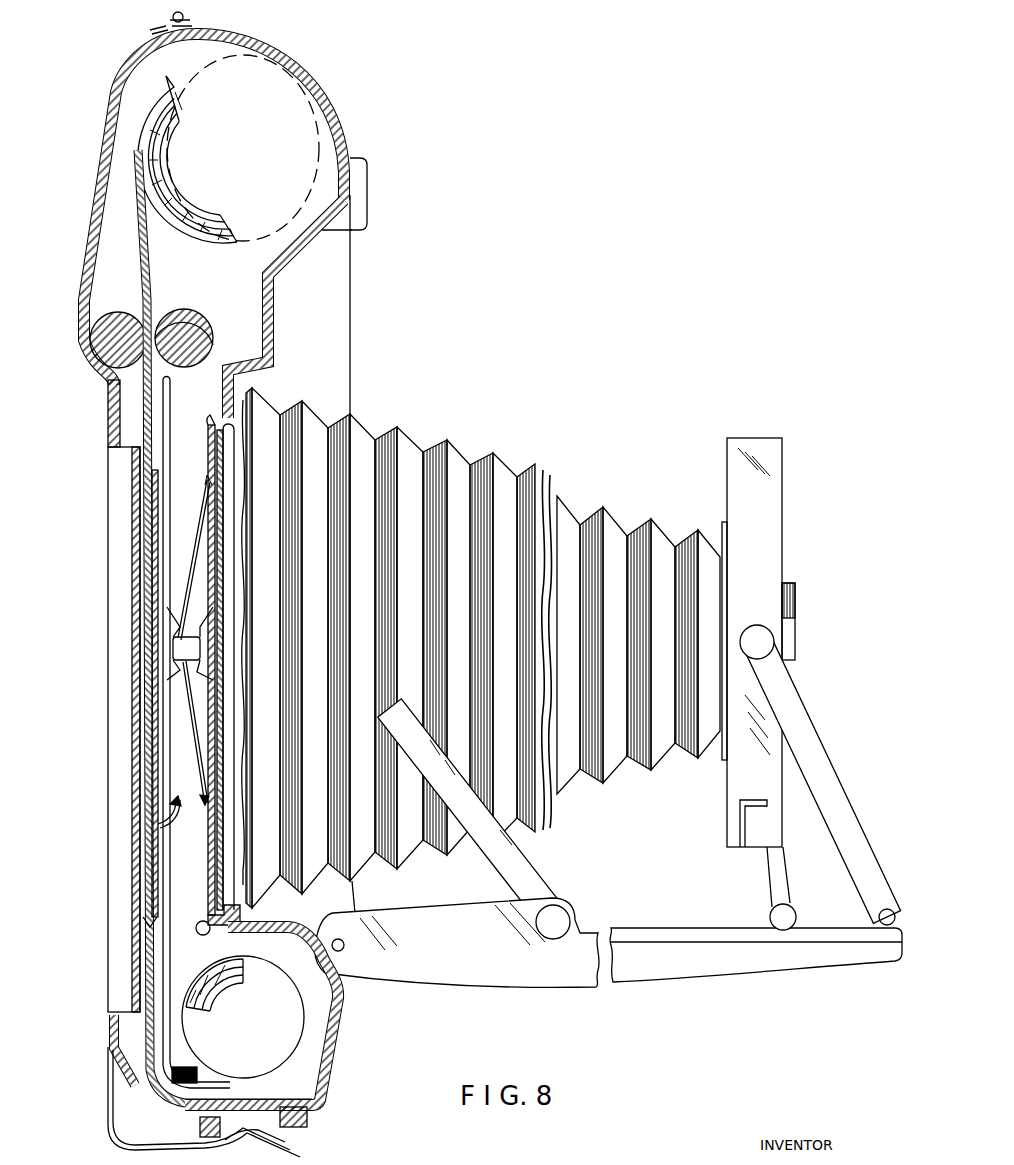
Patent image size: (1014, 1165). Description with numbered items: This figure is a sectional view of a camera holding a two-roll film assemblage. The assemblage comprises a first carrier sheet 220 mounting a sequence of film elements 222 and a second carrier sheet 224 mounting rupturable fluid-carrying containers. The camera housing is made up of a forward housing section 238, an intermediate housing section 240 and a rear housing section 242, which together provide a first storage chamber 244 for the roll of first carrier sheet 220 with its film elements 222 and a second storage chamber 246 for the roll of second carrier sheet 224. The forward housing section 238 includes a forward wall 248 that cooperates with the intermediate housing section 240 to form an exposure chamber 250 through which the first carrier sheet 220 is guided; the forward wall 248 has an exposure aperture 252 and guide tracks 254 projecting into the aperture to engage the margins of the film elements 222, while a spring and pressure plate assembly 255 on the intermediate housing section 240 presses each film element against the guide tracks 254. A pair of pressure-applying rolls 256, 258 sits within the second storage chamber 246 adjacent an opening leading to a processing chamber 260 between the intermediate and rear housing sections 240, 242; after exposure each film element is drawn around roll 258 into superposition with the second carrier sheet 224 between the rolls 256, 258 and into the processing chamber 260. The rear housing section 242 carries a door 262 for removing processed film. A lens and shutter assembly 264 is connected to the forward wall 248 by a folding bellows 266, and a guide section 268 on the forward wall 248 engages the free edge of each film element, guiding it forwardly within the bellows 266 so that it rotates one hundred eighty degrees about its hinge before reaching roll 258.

The first carrier sheet 220 is at (225, 904).
The film elements 222 is at (213, 703).
The second carrier sheet 224 is at (140, 1064).
The forward housing section 238 is at (366, 148).
The intermediate housing section 240 is at (140, 851).
The rear housing section 242 is at (86, 214).
The first storage chamber 244 is at (297, 1081).
The second storage chamber 246 is at (133, 85).
The forward wall 248 is at (280, 278).
The exposure chamber 250 is at (244, 509).
The exposure aperture 252 is at (228, 869).
The guide tracks 254 is at (230, 464).
The spring and pressure plate assembly 255 is at (207, 623).
The pressure-applying roll 256 is at (205, 320).
The pressure-applying roll 258 is at (148, 312).
The processing chamber 260 is at (130, 396).
The door 262 is at (130, 498).
The lens and shutter assembly 264 is at (780, 567).
The folding bellows 266 is at (458, 462).
The guide section 268 is at (255, 408).